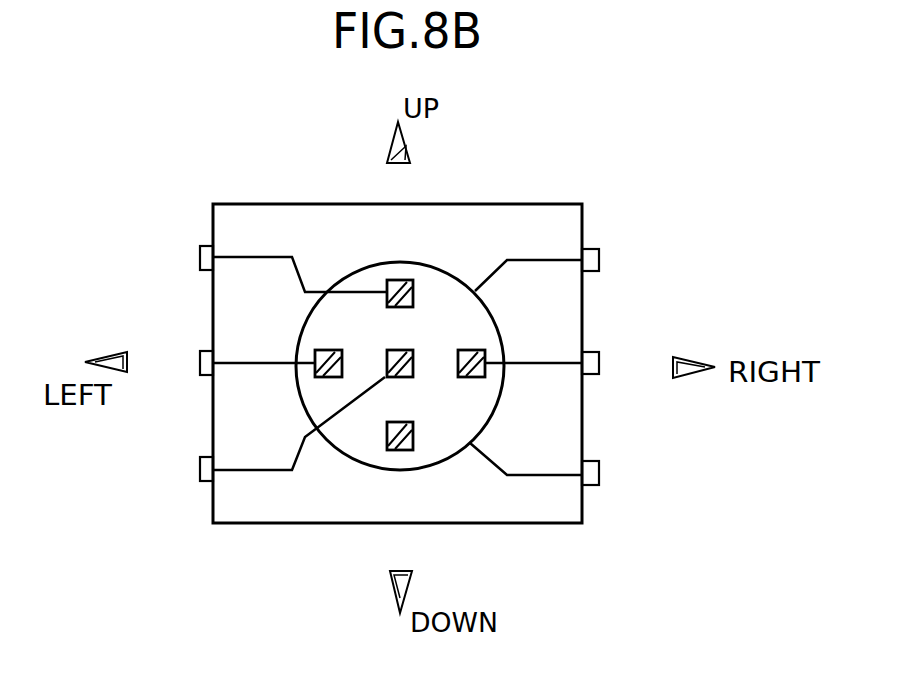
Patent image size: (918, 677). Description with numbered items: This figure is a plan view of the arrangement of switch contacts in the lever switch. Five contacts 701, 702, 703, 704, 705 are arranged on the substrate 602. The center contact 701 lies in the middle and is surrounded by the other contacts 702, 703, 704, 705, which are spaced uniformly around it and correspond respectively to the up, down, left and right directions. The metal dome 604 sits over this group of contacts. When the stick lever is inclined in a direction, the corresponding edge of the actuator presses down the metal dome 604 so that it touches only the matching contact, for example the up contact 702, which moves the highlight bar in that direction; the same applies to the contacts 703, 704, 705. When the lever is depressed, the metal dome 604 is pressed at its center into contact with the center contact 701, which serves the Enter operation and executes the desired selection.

The substrate 602 is at (538, 204).
The metal dome 604 is at (502, 337).
The center contact 701 is at (393, 380).
The contact 702 is at (388, 283).
The contact 703 is at (414, 447).
The contact 704 is at (315, 352).
The contact 705 is at (472, 378).